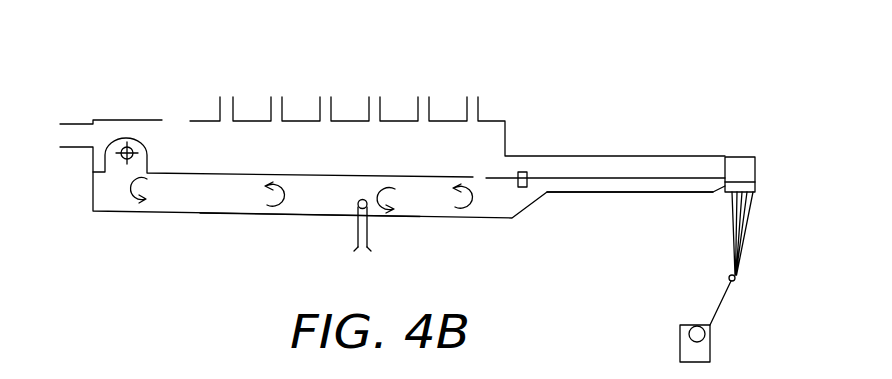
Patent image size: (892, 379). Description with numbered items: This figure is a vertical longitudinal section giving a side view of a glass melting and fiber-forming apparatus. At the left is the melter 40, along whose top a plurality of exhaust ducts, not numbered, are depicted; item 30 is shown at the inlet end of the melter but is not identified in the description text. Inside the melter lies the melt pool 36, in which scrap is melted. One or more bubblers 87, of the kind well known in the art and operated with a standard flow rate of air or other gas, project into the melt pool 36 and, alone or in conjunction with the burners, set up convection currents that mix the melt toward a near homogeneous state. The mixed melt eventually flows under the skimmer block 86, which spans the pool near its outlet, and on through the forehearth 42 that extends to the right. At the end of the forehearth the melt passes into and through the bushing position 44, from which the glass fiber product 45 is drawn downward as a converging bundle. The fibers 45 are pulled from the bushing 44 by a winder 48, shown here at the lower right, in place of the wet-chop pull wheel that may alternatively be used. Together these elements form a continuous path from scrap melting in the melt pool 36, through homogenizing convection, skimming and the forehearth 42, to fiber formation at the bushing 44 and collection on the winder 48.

The paper supply roll 30 is at (122, 160).
The melt pool 36 is at (312, 201).
The melter 40 is at (133, 119).
The forehearth 42 is at (633, 156).
The bushing position 44 is at (755, 193).
The glass fiber product 45 is at (743, 238).
The winder 48 is at (710, 341).
The skimmer block 86 is at (525, 172).
The bubbler 87 is at (368, 225).